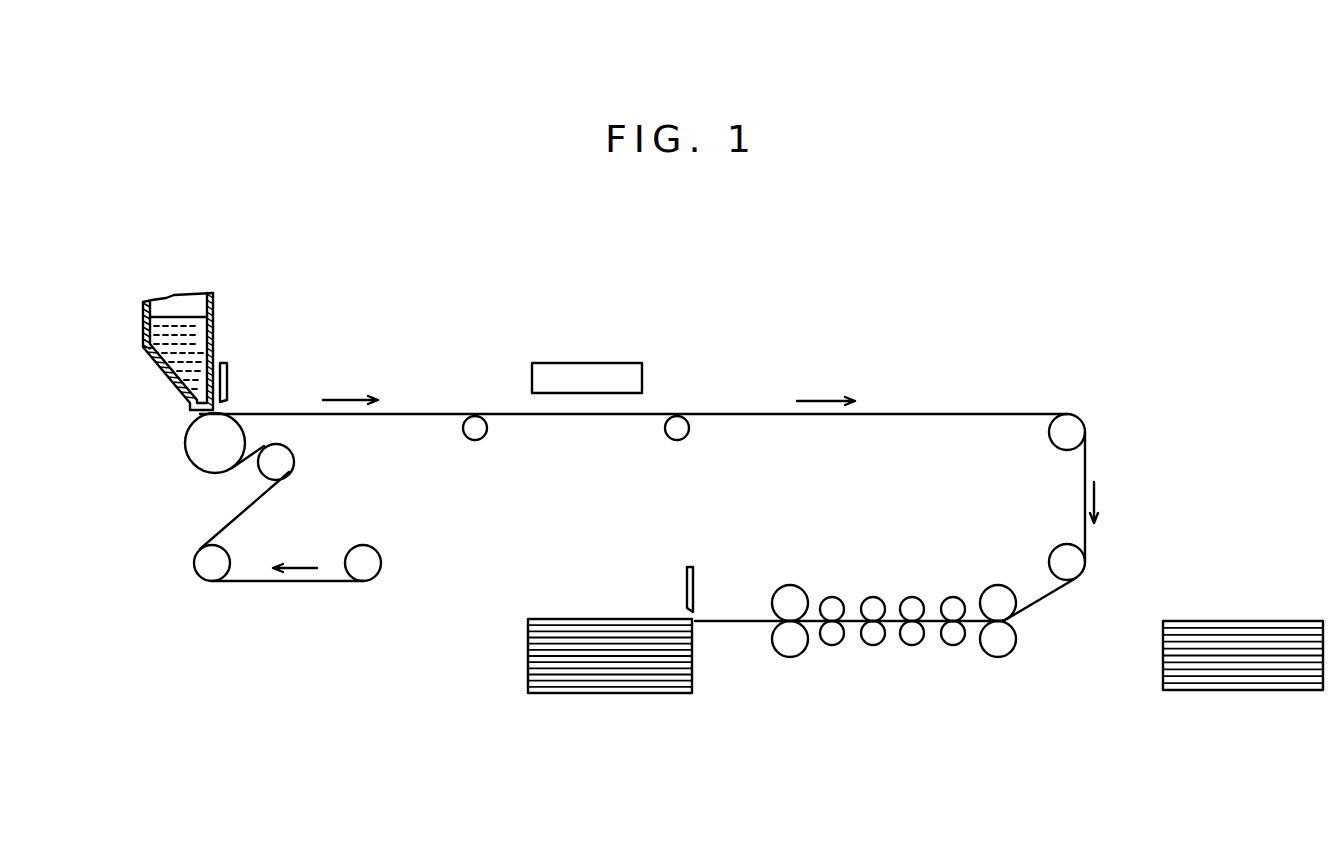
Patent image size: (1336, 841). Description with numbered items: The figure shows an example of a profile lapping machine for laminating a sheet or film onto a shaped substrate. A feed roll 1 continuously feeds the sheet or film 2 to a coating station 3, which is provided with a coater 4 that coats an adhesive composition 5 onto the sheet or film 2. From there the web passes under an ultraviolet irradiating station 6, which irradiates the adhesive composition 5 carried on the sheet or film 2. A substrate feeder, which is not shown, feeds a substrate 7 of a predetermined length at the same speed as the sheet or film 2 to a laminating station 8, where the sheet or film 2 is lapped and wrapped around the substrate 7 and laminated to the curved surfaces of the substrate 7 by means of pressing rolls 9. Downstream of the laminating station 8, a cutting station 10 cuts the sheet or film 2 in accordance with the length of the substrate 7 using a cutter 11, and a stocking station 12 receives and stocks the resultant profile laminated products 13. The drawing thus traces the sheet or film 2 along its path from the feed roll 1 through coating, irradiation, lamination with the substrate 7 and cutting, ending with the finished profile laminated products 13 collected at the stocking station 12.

The feed roll 1 is at (363, 573).
The sheet or film 2 is at (247, 582).
The coating station 3 is at (167, 260).
The coater 4 is at (193, 445).
The adhesive composition 5 is at (193, 342).
The ultraviolet irradiating station 6 is at (607, 328).
The substrate 7 is at (1202, 670).
The laminating station 8 is at (894, 630).
The pressing rolls 9 is at (787, 669).
The cutting station 10 is at (721, 550).
The cutter 11 is at (697, 580).
The stocking station 12 is at (610, 654).
The profile laminated products 13 is at (598, 668).